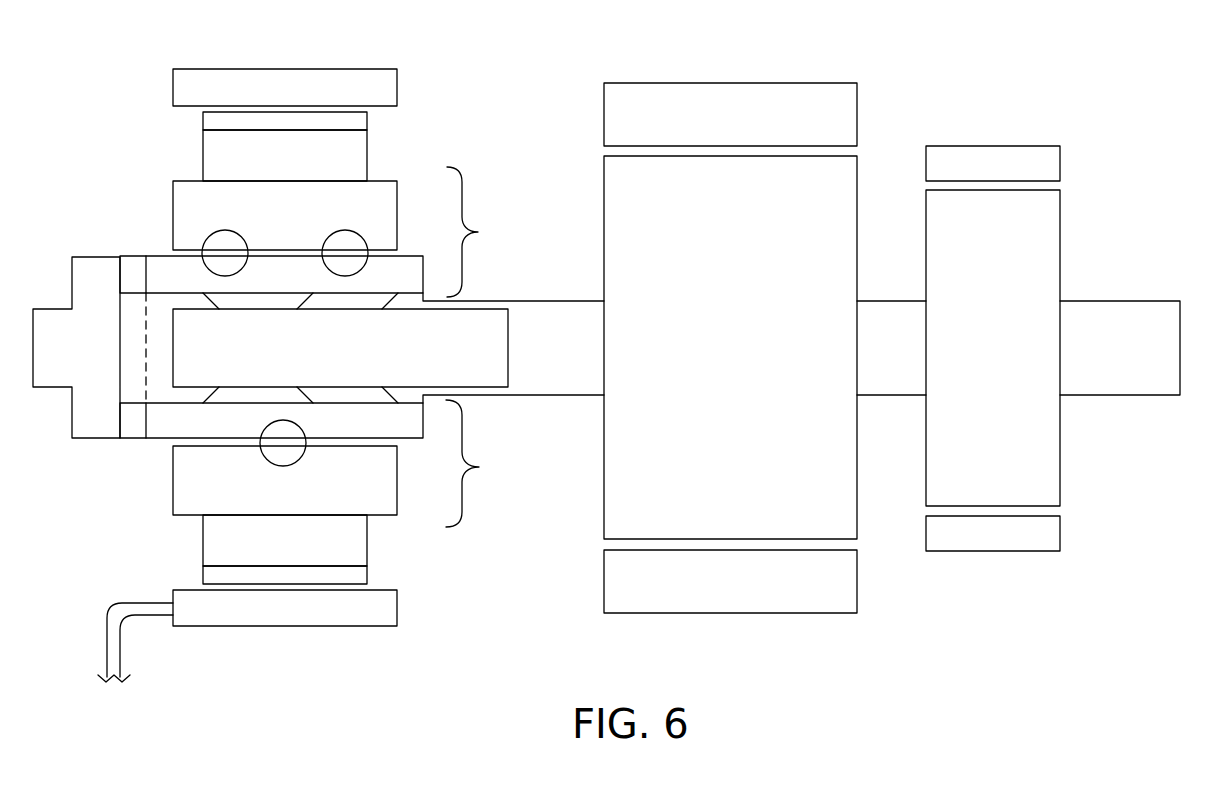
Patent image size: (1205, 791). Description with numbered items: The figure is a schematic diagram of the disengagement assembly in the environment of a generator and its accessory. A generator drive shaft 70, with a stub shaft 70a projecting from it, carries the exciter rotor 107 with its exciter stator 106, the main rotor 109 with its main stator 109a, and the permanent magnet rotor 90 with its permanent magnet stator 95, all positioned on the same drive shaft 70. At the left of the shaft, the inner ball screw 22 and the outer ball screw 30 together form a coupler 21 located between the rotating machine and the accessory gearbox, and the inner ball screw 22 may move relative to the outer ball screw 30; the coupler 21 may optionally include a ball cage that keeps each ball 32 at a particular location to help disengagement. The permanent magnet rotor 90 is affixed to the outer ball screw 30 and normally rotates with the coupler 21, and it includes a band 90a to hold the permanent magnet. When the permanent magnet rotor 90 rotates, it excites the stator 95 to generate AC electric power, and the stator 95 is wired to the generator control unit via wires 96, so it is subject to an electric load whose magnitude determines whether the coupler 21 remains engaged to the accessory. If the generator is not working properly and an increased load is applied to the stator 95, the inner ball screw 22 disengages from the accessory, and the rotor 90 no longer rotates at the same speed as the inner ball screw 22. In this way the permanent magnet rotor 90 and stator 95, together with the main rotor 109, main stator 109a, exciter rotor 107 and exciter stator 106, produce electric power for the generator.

The coupler 21 is at (481, 347).
The inner ball screw 22 is at (160, 267).
The outer ball screw 30 is at (180, 193).
The ball 32 is at (228, 240).
The generator drive shaft 70 is at (498, 330).
The stub shaft 70a is at (52, 377).
The permanent magnet rotor 90 is at (360, 152).
The band 90a is at (360, 120).
The permanent magnet stator 95 is at (273, 83).
The wires 96 is at (105, 650).
The exciter stator 106 is at (1013, 152).
The exciter rotor 107 is at (1052, 440).
The main rotor 109 is at (623, 272).
The main stator 109a is at (748, 95).